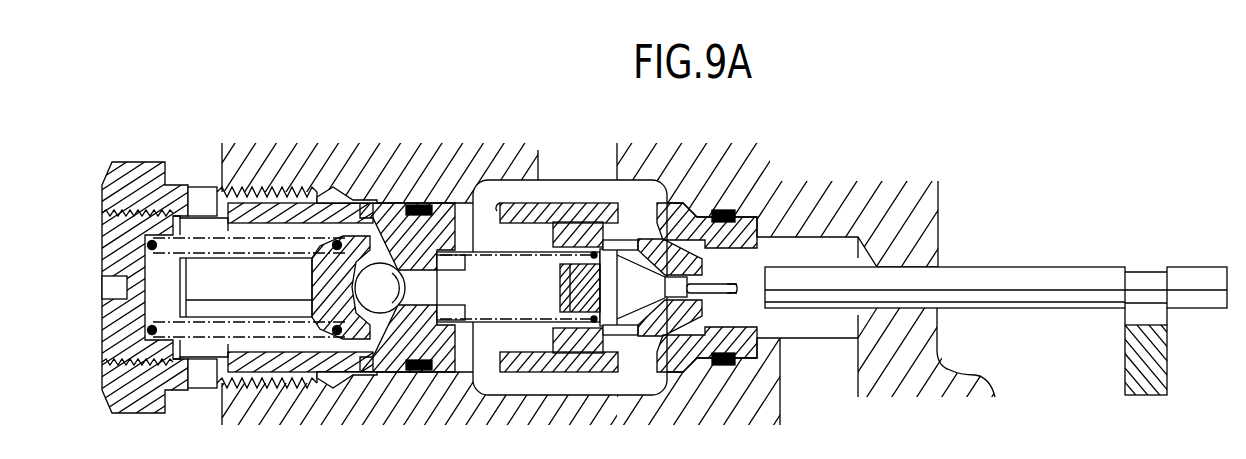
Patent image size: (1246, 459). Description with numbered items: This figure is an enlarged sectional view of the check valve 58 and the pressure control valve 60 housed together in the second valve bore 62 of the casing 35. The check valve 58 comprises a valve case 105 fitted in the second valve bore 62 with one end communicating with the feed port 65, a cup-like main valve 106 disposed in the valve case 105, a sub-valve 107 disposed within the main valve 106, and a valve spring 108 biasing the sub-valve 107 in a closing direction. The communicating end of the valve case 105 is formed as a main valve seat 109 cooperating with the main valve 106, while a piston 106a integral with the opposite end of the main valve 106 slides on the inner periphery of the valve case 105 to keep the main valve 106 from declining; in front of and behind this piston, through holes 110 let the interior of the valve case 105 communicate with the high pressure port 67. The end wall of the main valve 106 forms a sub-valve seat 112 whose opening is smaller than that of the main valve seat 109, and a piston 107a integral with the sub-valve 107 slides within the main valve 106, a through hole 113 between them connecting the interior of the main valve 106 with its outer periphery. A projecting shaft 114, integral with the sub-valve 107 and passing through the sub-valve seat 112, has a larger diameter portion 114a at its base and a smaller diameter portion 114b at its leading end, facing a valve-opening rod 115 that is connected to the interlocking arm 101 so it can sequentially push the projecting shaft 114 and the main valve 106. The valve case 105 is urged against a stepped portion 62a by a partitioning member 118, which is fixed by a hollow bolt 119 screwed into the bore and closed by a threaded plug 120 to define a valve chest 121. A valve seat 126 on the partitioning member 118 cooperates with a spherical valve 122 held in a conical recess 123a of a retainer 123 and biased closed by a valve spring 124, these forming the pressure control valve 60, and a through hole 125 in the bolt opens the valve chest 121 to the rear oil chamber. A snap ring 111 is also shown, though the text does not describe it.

The casing 35 is at (362, 152).
The check valve 58 is at (578, 205).
The pressure control valve 60 is at (300, 227).
The second valve bore 62 is at (398, 376).
The stepped portion 62a is at (757, 210).
The feed port 65 is at (856, 362).
The high pressure port 67 is at (538, 158).
The interlocking arm 101 is at (1167, 355).
The valve case 105 is at (559, 213).
The main valve 106 is at (673, 250).
The piston 106a is at (556, 238).
The sub-valve 107 is at (588, 229).
The piston 107a is at (632, 229).
The valve spring 108 is at (465, 262).
The main valve seat 109 is at (665, 345).
The through holes 110 is at (620, 200).
The snap ring 111 is at (499, 205).
The sub-valve seat 112 is at (645, 312).
The through hole 113 is at (612, 336).
The projecting shaft 114 is at (724, 347).
The larger diameter portion 114a is at (692, 297).
The smaller diameter portion 114b is at (745, 290).
The valve-opening rod 115 is at (987, 268).
The partitioning member 118 is at (392, 205).
The hollow bolt 119 is at (136, 168).
The threaded plug 120 is at (106, 252).
The valve chest 121 is at (253, 228).
The spherical valve 122 is at (380, 288).
The retainer 123 is at (246, 287).
The conical recess 123a is at (355, 278).
The valve spring 124 is at (153, 326).
The through hole 125 is at (190, 389).
The valve seat 126 is at (388, 264).